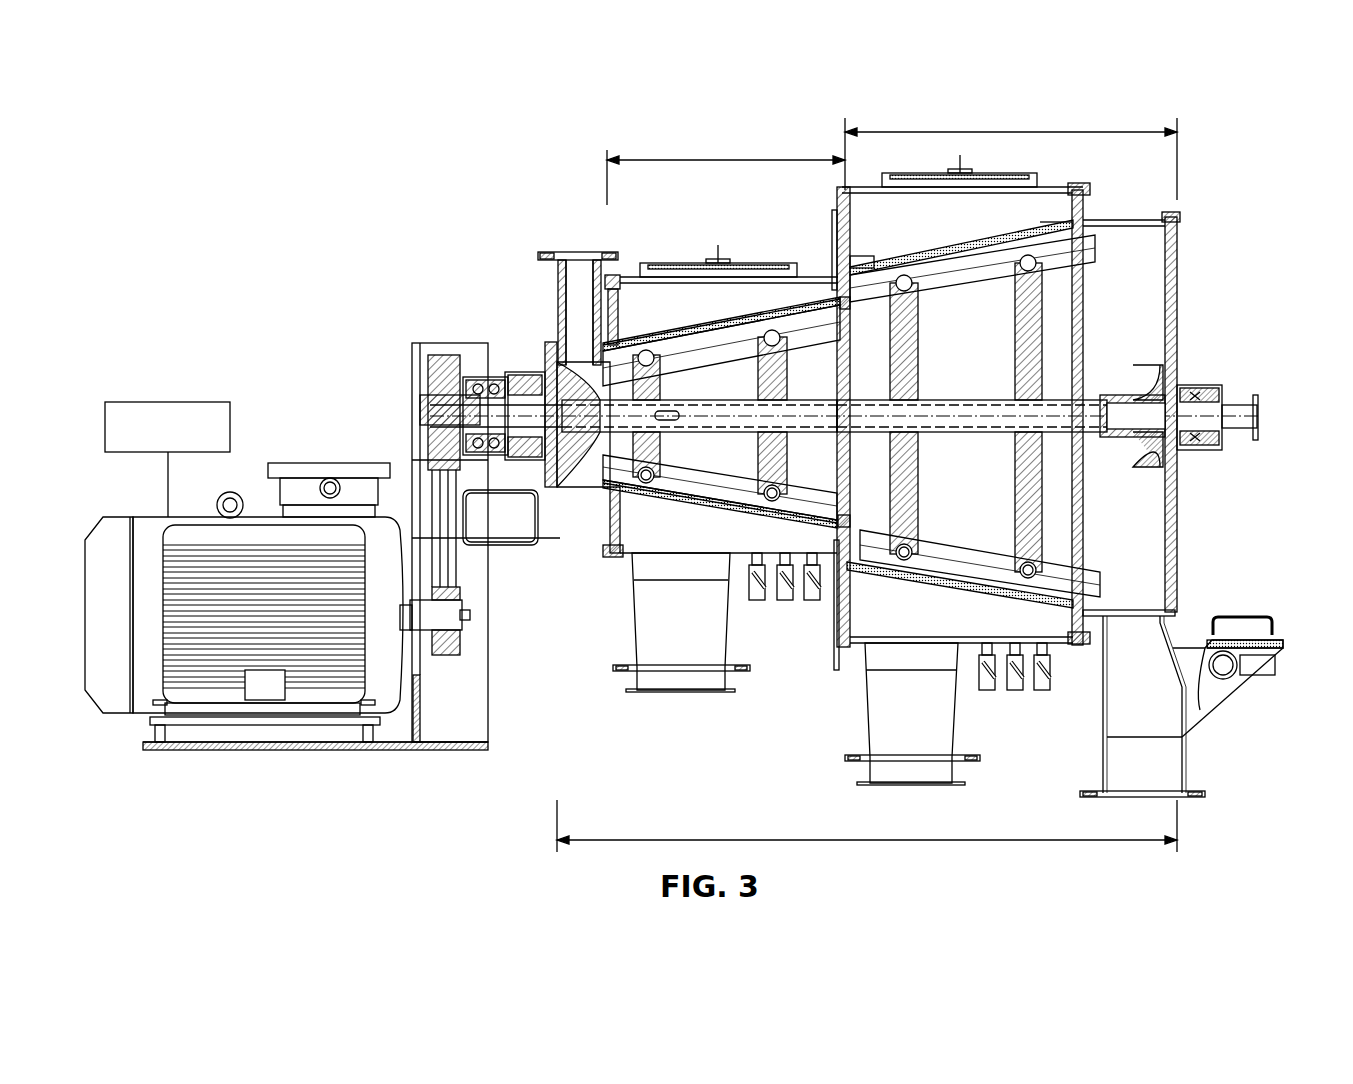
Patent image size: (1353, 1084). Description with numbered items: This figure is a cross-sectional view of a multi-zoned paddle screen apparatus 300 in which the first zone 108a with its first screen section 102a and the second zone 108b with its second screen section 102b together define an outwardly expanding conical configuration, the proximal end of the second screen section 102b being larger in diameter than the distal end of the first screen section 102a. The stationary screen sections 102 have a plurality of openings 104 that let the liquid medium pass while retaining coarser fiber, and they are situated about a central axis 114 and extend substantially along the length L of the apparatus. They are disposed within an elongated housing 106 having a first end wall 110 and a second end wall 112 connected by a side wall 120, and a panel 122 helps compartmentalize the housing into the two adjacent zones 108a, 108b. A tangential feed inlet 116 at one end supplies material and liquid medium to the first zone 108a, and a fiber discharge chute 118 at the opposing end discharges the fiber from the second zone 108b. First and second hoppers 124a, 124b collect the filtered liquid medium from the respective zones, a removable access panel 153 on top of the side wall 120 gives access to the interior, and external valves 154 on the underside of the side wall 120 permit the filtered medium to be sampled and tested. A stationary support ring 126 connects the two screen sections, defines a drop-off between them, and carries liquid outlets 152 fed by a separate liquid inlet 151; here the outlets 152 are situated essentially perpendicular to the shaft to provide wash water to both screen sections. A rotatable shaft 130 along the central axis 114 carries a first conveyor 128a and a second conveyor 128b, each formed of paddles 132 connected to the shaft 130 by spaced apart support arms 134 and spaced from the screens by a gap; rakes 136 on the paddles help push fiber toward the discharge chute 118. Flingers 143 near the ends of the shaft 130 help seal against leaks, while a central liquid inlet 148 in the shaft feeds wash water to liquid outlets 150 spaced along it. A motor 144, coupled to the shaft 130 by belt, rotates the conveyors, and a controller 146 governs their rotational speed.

The apparatus 300 is at (352, 250).
The controller 146 is at (140, 402).
The motor 144 is at (198, 517).
The tangential feed inlet 116 is at (580, 252).
The housing 106 is at (632, 275).
The side wall 120 is at (822, 277).
The panel 122 is at (836, 215).
The removable access panel 153 is at (748, 263).
The second end wall 112 is at (1086, 203).
The screen sections 102 is at (1048, 225).
The first screen section 102a is at (712, 328).
The second screen section 102b is at (1003, 242).
The paddles 132 is at (820, 320).
The openings 104 is at (660, 340).
The rake 136 is at (968, 580).
The support ring 126 is at (868, 272).
The liquid outlets 152 is at (850, 300).
The support arms 134 is at (660, 440).
The first conveyor 128a is at (685, 400).
The second conveyor 128b is at (948, 400).
The shaft 130 is at (1100, 392).
The flingers 143 is at (1148, 365).
The liquid outlets 150 is at (1060, 455).
The central axis 114 is at (1232, 405).
The liquid inlet 148 is at (1256, 418).
The first end wall 110 is at (610, 518).
The liquid inlet 151 is at (835, 670).
The first hopper 124a is at (680, 690).
The second hopper 124b is at (916, 775).
The external valves 154 is at (757, 600).
The fiber discharge chute 118 is at (1138, 783).
The first zone 108a is at (718, 160).
The second zone 108b is at (968, 132).
The length L is at (845, 843).